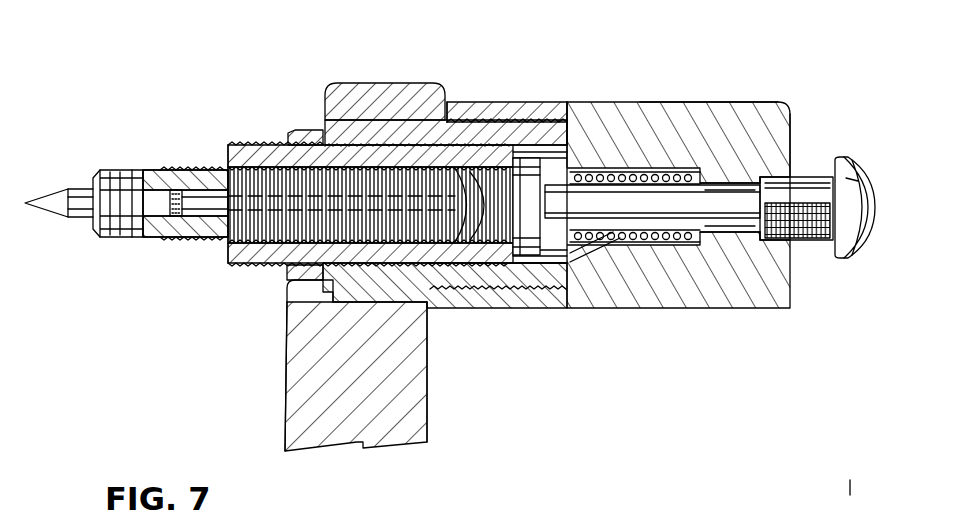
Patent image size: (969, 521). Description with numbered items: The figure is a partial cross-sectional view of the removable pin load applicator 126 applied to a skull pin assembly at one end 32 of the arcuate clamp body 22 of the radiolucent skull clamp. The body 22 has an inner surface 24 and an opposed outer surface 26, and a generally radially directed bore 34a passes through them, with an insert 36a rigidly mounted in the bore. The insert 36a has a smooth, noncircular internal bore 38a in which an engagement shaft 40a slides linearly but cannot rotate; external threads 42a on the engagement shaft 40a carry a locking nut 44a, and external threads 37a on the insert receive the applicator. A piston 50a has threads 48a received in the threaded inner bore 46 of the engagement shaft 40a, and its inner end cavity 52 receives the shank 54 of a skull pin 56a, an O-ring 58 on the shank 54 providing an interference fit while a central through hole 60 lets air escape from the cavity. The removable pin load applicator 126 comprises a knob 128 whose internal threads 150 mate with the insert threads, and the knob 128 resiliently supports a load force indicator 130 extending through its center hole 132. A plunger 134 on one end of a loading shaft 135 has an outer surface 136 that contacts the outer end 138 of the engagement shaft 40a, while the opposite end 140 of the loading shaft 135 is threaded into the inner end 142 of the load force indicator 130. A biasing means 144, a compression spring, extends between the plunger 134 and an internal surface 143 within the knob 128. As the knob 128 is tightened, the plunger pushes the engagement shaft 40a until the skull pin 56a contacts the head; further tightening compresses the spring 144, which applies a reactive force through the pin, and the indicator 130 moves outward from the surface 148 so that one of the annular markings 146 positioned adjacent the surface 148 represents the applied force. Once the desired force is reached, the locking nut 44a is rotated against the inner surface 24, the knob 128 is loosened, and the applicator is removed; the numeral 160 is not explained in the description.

The clamp body 22 is at (280, 377).
The inner surface 24 is at (286, 432).
The outer surface 26 is at (450, 392).
The end of the body 32 is at (287, 322).
The bore 34a is at (428, 167).
The insert 36a is at (563, 116).
The external threads 37a is at (545, 300).
The internal bore 38a is at (450, 165).
The engagement shaft 40a is at (470, 292).
The external threads 42a is at (505, 266).
The locking nut 44a is at (302, 130).
The threaded inner bore 46 is at (498, 165).
The threads 48a is at (342, 104).
The piston 50a is at (398, 120).
The inner end cavity 52 is at (135, 240).
The shank 54 is at (165, 190).
The skull pin 56a is at (72, 190).
The O-ring 58 is at (176, 240).
The central through hole 60 is at (245, 145).
The removable pin load applicator 126 is at (740, 50).
The knob 128 is at (632, 130).
The load force indicator 130 is at (862, 160).
The center hole 132 is at (762, 172).
The plunger 134 is at (540, 208).
The loading shaft 135 is at (665, 200).
The outer surface 136 is at (455, 250).
The outer end 138 is at (545, 150).
The opposite end 140 is at (738, 176).
The inner end 142 is at (742, 205).
The internal surface 143 is at (670, 170).
The biasing means 144 is at (595, 255).
The annular markings 146 is at (863, 218).
The surface 148 is at (792, 132).
The internal threads 150 is at (559, 145).
The reference mark 160 is at (849, 500).